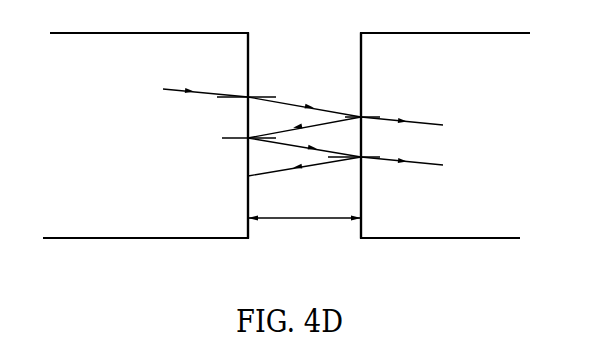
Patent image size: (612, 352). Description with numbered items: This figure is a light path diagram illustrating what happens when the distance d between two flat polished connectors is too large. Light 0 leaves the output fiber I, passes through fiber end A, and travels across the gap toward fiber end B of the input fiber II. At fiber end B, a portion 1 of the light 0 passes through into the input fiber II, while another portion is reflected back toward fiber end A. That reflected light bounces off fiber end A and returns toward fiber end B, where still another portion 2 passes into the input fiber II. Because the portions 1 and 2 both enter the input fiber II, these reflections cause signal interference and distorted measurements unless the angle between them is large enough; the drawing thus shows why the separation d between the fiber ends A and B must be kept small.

The light 0 is at (251, 111).
The portion of the light 1 is at (406, 102).
The portion of the light 2 is at (402, 181).
The fiber end A is at (246, 121).
The fiber end B is at (354, 121).
The output fiber I is at (145, 135).
The input fiber II is at (445, 135).
The distance d is at (304, 210).